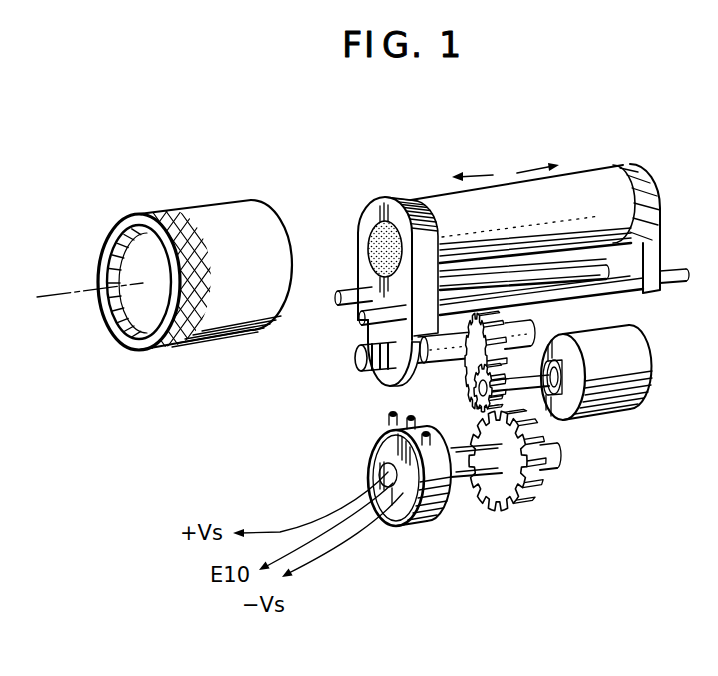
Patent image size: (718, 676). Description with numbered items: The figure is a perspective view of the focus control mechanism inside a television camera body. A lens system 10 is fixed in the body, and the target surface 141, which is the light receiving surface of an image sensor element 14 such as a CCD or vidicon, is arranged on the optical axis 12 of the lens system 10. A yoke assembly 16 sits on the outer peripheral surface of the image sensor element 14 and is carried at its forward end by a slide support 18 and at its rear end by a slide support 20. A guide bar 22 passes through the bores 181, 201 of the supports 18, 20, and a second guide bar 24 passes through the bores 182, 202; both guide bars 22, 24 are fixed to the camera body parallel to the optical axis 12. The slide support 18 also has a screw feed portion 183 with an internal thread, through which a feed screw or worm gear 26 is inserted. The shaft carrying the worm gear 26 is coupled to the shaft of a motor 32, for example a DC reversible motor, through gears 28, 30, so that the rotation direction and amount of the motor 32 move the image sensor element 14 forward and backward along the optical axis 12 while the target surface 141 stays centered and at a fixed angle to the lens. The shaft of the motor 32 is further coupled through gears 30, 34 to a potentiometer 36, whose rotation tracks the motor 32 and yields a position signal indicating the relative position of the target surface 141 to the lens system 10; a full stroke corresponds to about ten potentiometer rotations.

The lens system 10 is at (215, 213).
The optical axis 12 is at (86, 281).
The image sensor element 14 is at (343, 208).
The target surface 141 is at (381, 224).
The yoke assembly 16 is at (592, 177).
The slide support 18 is at (374, 277).
The bore 181 is at (371, 291).
The bore 182 is at (422, 360).
The screw feed portion 183 is at (371, 365).
The slide support 20 is at (570, 246).
The bore 201 is at (534, 293).
The bore 202 is at (637, 296).
The guide bar 22 is at (336, 305).
The guide bar 24 is at (358, 320).
The worm gear 26 is at (356, 357).
The gear 28 is at (503, 313).
The gear 30 is at (528, 402).
The motor 32 is at (654, 351).
The gear 34 is at (537, 493).
The potentiometer 36 is at (399, 512).